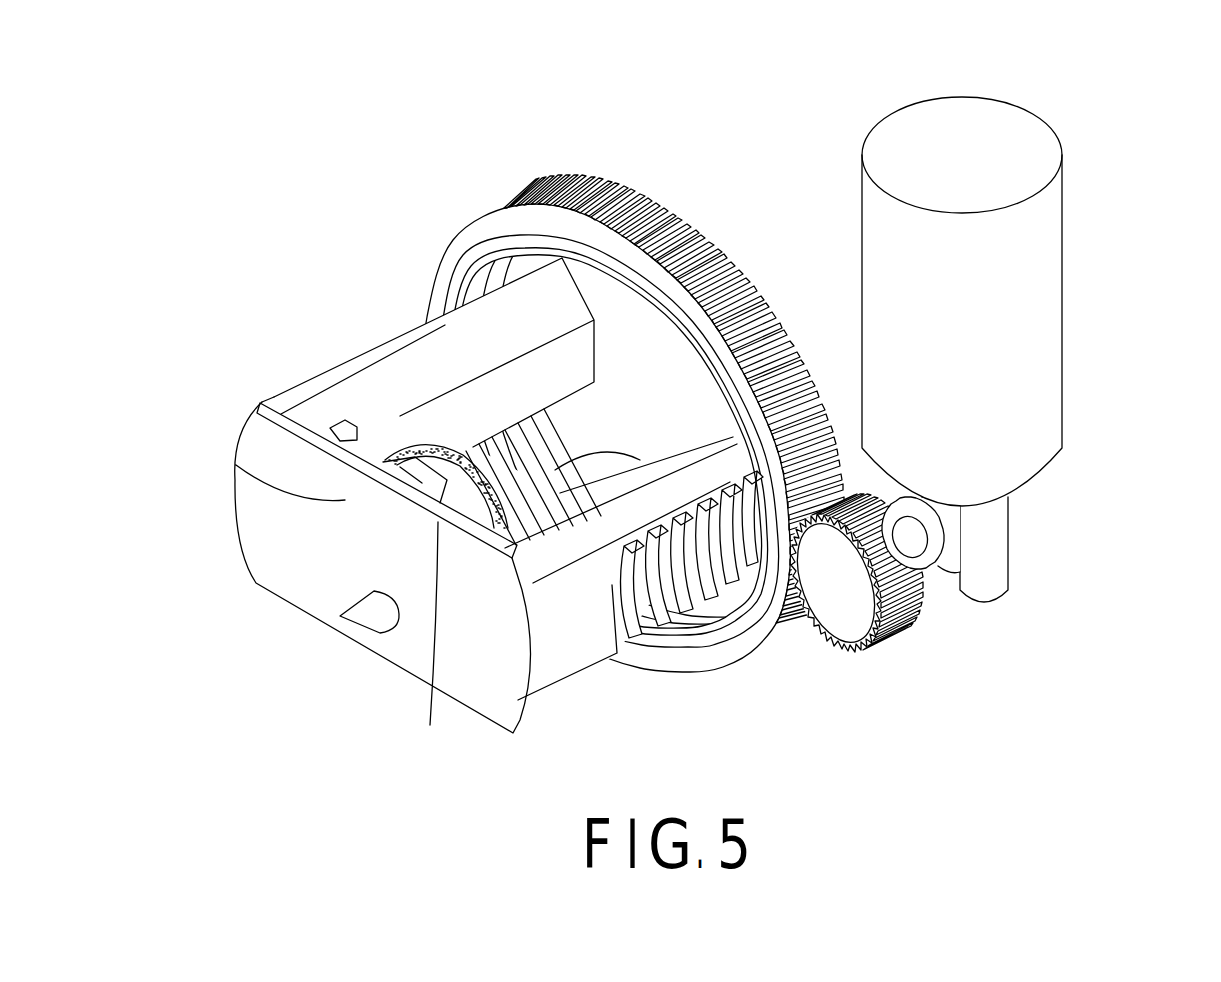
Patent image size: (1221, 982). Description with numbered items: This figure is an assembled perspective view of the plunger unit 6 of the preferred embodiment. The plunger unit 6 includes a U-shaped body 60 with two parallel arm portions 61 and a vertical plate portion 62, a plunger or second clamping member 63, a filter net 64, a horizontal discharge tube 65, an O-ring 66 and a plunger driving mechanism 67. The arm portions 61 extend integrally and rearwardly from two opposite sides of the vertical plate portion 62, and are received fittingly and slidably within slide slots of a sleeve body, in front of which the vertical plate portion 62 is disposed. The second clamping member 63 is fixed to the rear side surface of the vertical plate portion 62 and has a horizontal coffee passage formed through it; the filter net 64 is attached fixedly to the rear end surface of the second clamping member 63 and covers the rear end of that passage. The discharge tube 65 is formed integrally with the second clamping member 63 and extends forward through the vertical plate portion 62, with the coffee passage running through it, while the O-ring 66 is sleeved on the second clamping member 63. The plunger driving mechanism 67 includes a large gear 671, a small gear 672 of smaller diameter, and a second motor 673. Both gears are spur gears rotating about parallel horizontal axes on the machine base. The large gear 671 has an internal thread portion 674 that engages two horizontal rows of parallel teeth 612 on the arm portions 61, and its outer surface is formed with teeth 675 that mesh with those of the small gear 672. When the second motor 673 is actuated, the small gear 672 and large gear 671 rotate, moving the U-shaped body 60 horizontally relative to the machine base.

The plunger unit 6 is at (748, 154).
The U-shaped body 60 is at (275, 396).
The arm portions 61 is at (322, 385).
The teeth 612 is at (690, 583).
The vertical plate portion 62 is at (430, 725).
The second clamping member 63 is at (440, 485).
The filter net 64 is at (453, 450).
The horizontal discharge tube 65 is at (368, 616).
The O-ring 66 is at (413, 432).
The plunger driving mechanism 67 is at (1010, 548).
The large gear 671 is at (573, 178).
The small gear 672 is at (897, 643).
The second motor 673 is at (1038, 352).
The internal thread portion 674 is at (560, 440).
The teeth 675 is at (790, 495).